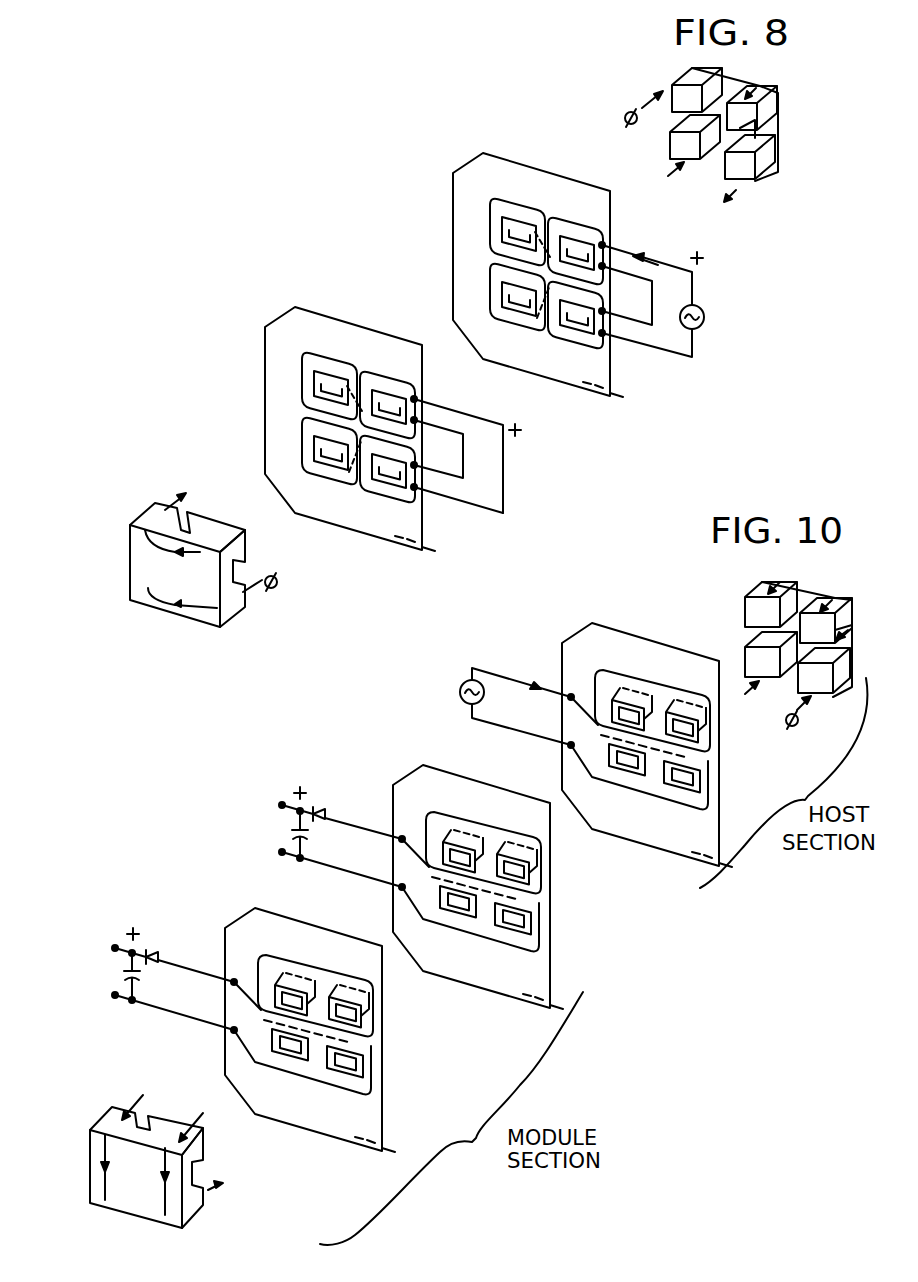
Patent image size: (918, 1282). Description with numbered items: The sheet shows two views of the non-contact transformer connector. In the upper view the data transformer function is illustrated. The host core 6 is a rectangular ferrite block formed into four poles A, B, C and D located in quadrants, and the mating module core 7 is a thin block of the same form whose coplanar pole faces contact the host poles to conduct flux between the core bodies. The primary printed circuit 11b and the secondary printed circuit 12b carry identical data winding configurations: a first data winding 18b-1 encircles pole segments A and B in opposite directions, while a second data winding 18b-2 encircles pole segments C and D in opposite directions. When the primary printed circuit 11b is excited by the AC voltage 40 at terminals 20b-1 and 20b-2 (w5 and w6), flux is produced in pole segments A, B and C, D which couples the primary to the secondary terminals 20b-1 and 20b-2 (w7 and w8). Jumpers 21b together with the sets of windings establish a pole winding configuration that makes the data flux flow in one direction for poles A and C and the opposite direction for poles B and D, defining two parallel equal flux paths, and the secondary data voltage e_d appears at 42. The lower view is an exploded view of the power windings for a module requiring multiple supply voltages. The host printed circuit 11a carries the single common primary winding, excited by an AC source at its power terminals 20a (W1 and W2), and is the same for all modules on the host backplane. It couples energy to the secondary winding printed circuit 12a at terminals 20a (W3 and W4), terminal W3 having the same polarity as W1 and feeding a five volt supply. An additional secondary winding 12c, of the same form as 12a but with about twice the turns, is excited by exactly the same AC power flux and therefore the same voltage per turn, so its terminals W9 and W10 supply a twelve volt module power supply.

In FIG. 8, the host core 6 is at (779, 101).
In FIG. 8, the module core 7 is at (130, 548).
In FIG. 8, the primary printed circuit 11b is at (507, 160).
In FIG. 8, the secondary printed circuit 12b is at (313, 312).
In FIG. 8, the data winding 18b-1 is at (350, 364).
In FIG. 8, the data winding 18b-2 is at (348, 478).
In FIG. 8, the data terminal 20b-1 is at (660, 239).
In FIG. 8, the data terminal 20b-2 is at (647, 393).
In FIG. 8, the jumper 21b is at (652, 321).
In FIG. 8, the AC voltage 40 is at (703, 309).
In FIG. 8, the secondary data voltage output 42 is at (520, 469).
In FIG. 10, the host printed circuit 11a is at (672, 646).
In FIG. 10, the secondary winding printed circuit 12a is at (411, 763).
In FIG. 10, the additional secondary winding 12c is at (243, 925).
In FIG. 10, the power terminals 20a is at (386, 820).
In FIG. 10, the primary power terminal W1 is at (515, 682).
In FIG. 10, the primary power terminal W2 is at (521, 735).
In FIG. 10, the secondary power terminal W3 is at (305, 817).
In FIG. 10, the secondary power terminal W4 is at (340, 879).
In FIG. 10, the secondary power terminal W9 is at (131, 958).
In FIG. 10, the secondary power terminal W10 is at (173, 1022).